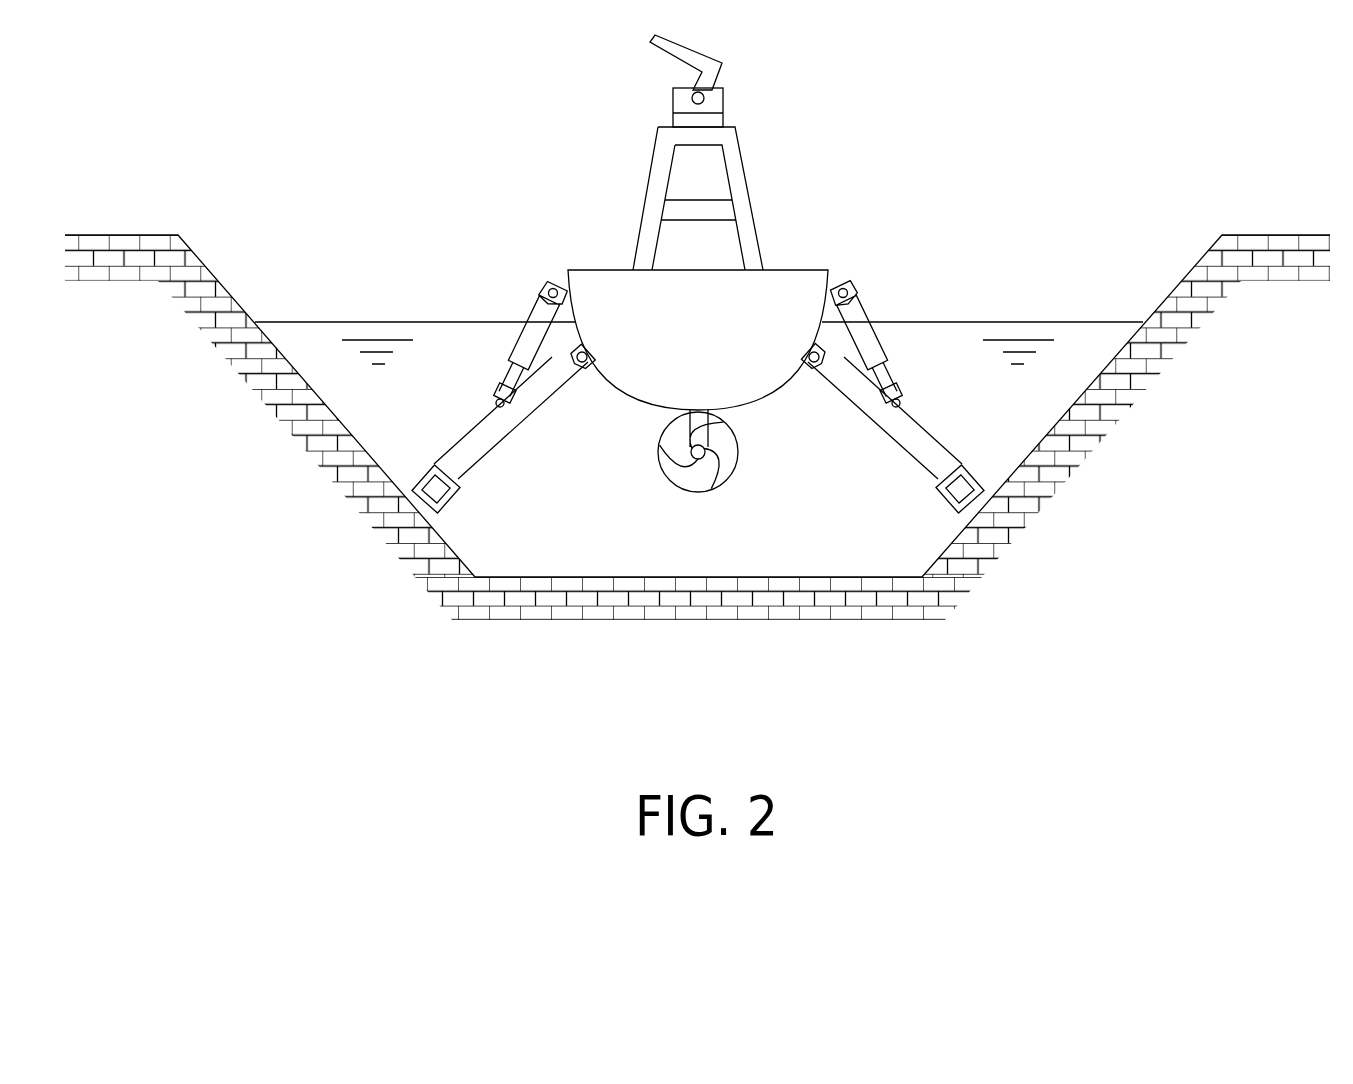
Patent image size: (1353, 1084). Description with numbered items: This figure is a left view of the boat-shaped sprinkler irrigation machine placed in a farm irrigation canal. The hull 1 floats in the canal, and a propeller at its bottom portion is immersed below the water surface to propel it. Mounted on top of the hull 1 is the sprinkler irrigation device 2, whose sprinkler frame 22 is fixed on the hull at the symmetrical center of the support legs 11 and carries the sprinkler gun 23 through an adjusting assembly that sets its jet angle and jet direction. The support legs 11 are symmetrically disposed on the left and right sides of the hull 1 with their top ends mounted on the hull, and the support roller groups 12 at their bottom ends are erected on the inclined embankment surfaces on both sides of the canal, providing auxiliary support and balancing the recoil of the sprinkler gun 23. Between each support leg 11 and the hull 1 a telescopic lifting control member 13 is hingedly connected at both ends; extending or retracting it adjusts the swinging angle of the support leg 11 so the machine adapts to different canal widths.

The hull 1 is at (633, 320).
The sprinkler irrigation device 2 is at (677, 179).
The sprinkler frame 22 is at (660, 182).
The sprinkler gun 23 is at (670, 53).
The telescopic lifting control member 13 is at (527, 335).
The support leg 11 is at (488, 438).
The support roller group 12 is at (424, 500).